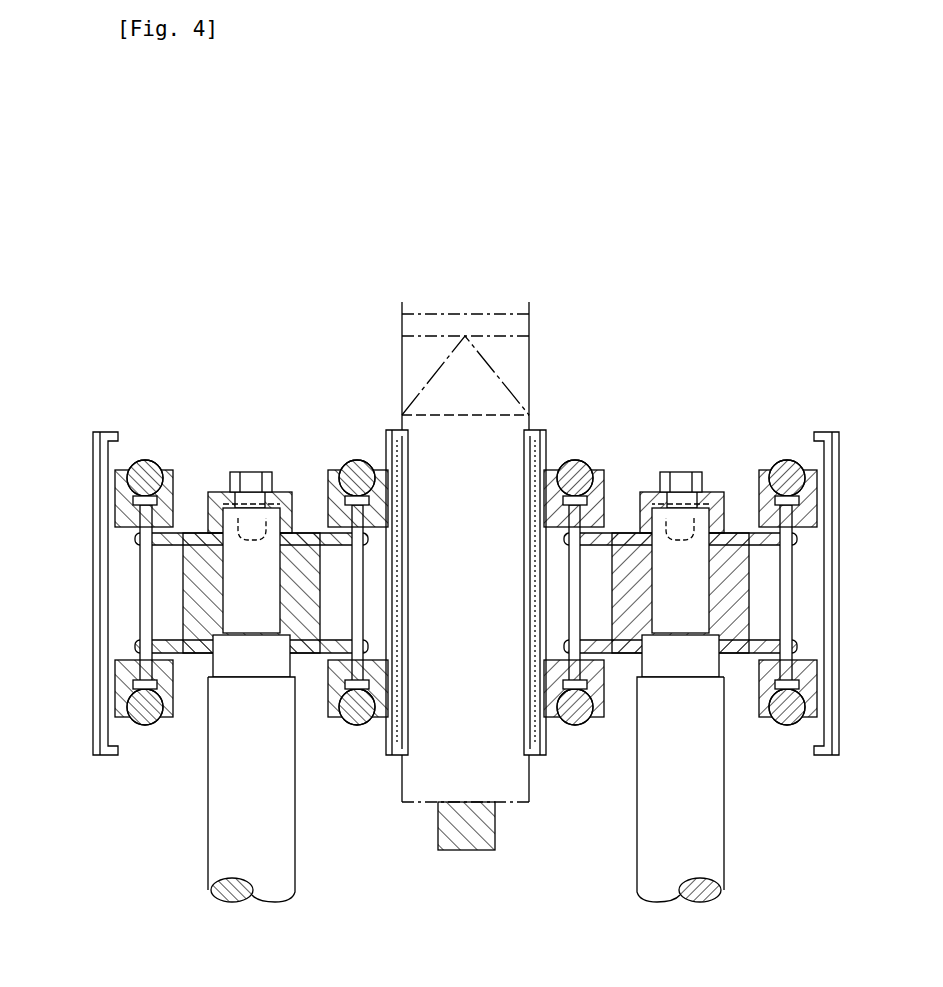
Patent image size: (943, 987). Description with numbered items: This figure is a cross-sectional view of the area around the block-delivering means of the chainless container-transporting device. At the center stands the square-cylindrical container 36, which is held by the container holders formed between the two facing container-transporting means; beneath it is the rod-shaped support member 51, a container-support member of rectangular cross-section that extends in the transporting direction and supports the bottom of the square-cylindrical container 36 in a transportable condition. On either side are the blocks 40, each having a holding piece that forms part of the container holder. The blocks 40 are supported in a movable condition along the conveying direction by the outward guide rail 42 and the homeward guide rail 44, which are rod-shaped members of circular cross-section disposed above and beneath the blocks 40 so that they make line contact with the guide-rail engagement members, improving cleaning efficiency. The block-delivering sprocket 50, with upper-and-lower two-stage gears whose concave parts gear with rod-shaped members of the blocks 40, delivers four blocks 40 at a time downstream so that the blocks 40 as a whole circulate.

The square-cylindrical container 36 is at (458, 313).
The block 40 is at (92, 424).
The outward guide rail 42 is at (356, 459).
The homeward guide rail 44 is at (144, 459).
The block-delivering sprocket 50 is at (250, 467).
The rod-shaped support member 51 is at (452, 851).